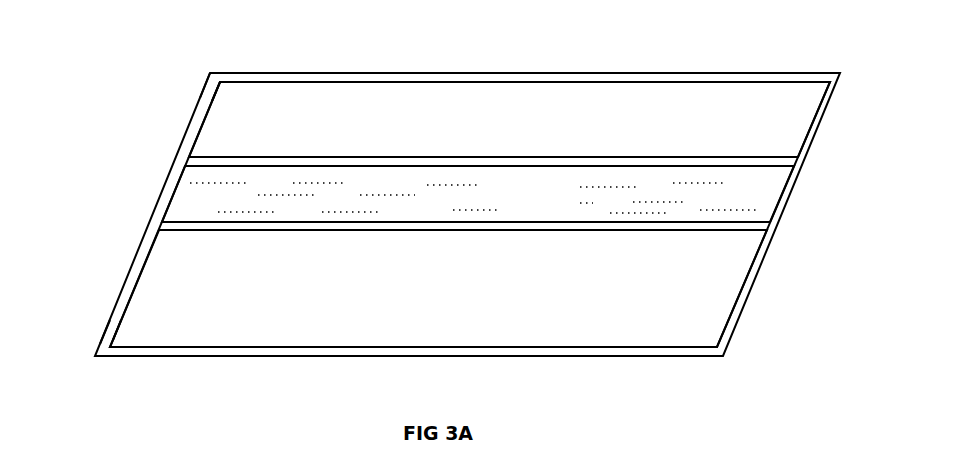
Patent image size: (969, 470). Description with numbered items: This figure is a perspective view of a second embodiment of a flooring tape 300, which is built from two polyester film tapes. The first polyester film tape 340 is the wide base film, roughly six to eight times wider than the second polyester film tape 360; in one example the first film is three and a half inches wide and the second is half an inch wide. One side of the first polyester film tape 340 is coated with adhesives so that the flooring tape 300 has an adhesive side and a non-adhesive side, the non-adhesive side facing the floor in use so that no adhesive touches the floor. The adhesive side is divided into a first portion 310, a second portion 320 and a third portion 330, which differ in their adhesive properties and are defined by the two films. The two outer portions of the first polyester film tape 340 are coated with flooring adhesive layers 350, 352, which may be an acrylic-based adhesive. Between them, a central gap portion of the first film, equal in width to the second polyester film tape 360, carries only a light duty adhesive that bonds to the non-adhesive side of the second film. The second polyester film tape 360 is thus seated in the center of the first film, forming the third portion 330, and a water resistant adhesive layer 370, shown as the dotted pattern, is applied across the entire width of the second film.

The flooring tape 300 is at (232, 30).
The first portion 310 is at (583, 140).
The second portion 320 is at (537, 300).
The third portion 330 is at (557, 212).
The first polyester film tape 340 is at (206, 83).
The flooring adhesive layer 350 is at (235, 128).
The flooring adhesive layer 352 is at (170, 318).
The second polyester film tape 360 is at (170, 219).
The water resistant adhesive layer 370 is at (225, 188).